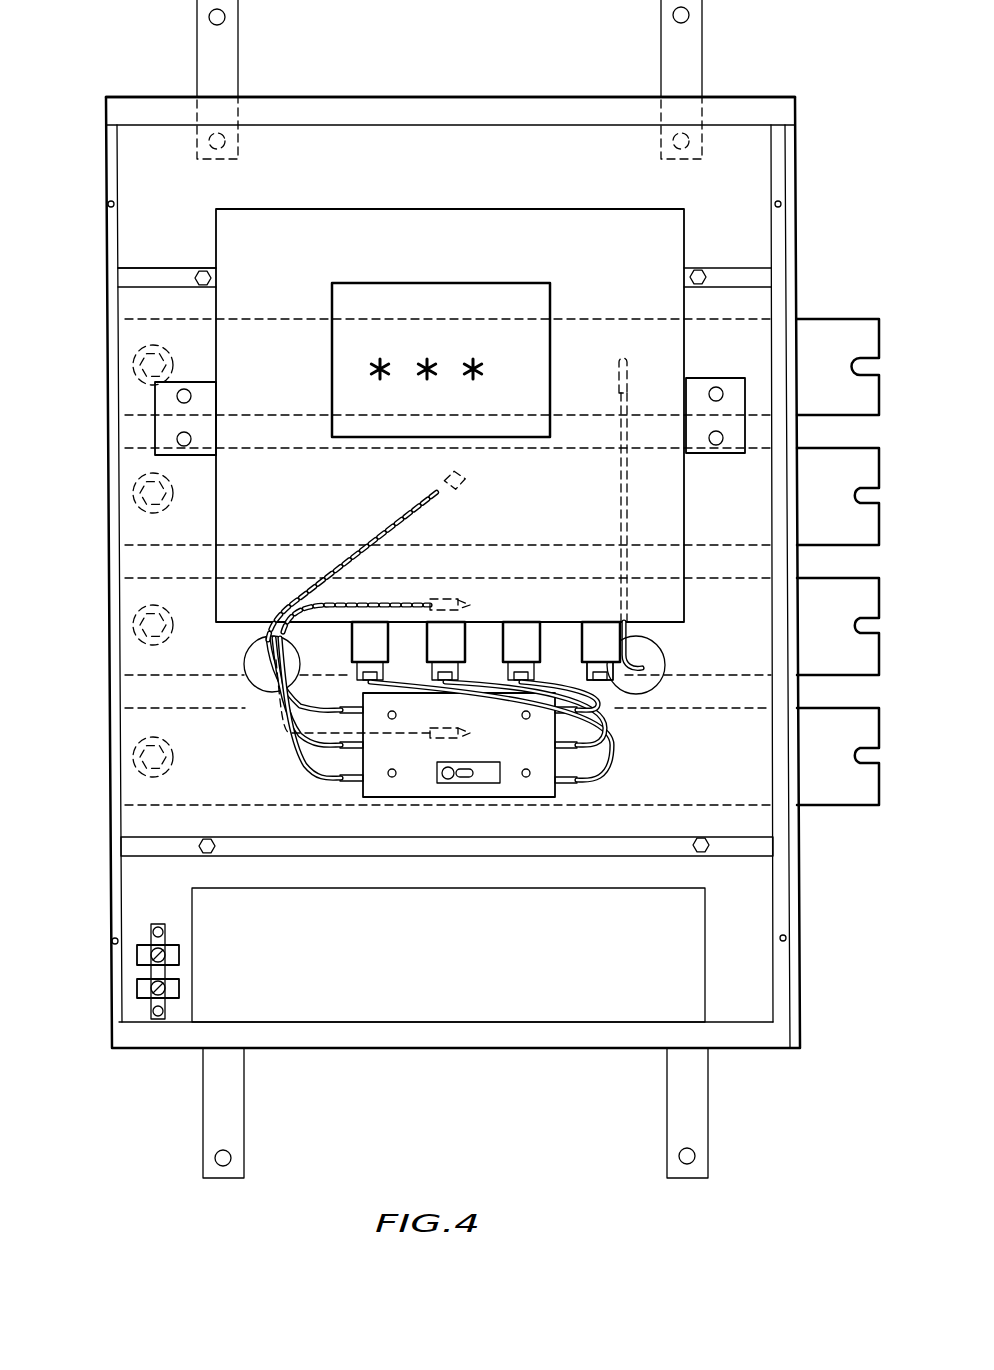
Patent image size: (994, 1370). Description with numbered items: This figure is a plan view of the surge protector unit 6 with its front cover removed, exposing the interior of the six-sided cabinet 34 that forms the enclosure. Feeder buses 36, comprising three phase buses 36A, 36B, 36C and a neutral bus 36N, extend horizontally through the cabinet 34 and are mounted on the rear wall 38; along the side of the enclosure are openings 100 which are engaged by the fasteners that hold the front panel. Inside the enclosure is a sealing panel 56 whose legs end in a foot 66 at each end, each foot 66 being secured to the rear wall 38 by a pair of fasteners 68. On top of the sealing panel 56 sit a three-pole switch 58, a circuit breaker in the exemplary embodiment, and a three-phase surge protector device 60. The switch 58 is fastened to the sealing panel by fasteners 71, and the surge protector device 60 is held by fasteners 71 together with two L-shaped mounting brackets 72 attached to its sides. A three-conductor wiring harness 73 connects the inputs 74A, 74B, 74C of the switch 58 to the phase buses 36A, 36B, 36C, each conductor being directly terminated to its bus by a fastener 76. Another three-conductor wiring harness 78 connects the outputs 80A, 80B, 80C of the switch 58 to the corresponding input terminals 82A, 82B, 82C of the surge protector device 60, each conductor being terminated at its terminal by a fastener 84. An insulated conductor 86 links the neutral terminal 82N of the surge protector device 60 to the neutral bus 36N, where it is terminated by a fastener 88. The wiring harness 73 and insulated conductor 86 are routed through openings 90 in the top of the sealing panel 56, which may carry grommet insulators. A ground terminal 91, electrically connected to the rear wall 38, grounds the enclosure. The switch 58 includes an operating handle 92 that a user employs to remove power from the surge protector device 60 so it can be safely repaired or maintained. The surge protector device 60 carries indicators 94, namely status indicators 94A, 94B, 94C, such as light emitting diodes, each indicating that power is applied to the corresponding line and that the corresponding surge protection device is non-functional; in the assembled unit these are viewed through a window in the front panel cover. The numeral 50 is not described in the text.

The surge protector unit 6 is at (457, 1107).
The cabinet 34 is at (802, 133).
The feeder buses 36 is at (850, 308).
The neutral bus 36N is at (862, 390).
The phase bus 36A is at (862, 520).
The phase bus 36B is at (862, 650).
The phase bus 36C is at (862, 780).
The rear wall 38 is at (483, 140).
The conduit knockouts 50 is at (145, 366).
The sealing panel 56 is at (148, 282).
The switch 58 is at (428, 798).
The surge protector device 60 is at (516, 207).
The foot 66 is at (749, 267).
The fasteners 68 is at (212, 278).
The fasteners 71 is at (177, 399).
The L-shaped mounting brackets 72 is at (202, 402).
The wiring harness 73 is at (236, 698).
The input 74A is at (332, 784).
The input 74B is at (326, 752).
The input 74C is at (284, 717).
The fastener 76 is at (470, 486).
The wiring harness 78 is at (632, 717).
The output 80A is at (588, 782).
The output 80B is at (606, 750).
The output 80C is at (598, 722).
The input terminal 82A is at (370, 651).
The input terminal 82B is at (446, 651).
The input terminal 82C is at (521, 651).
The neutral terminal 82N is at (601, 651).
The fastener 84 is at (617, 677).
The insulated conductor 86 is at (619, 496).
The fastener 88 is at (616, 360).
The openings 90 is at (248, 657).
The ground terminal 91 is at (136, 991).
The operating handle 92 is at (448, 780).
The indicators 94 is at (348, 356).
The status indicator 94A is at (382, 355).
The status indicator 94B is at (429, 355).
The status indicator 94C is at (475, 355).
The openings 100 is at (108, 204).